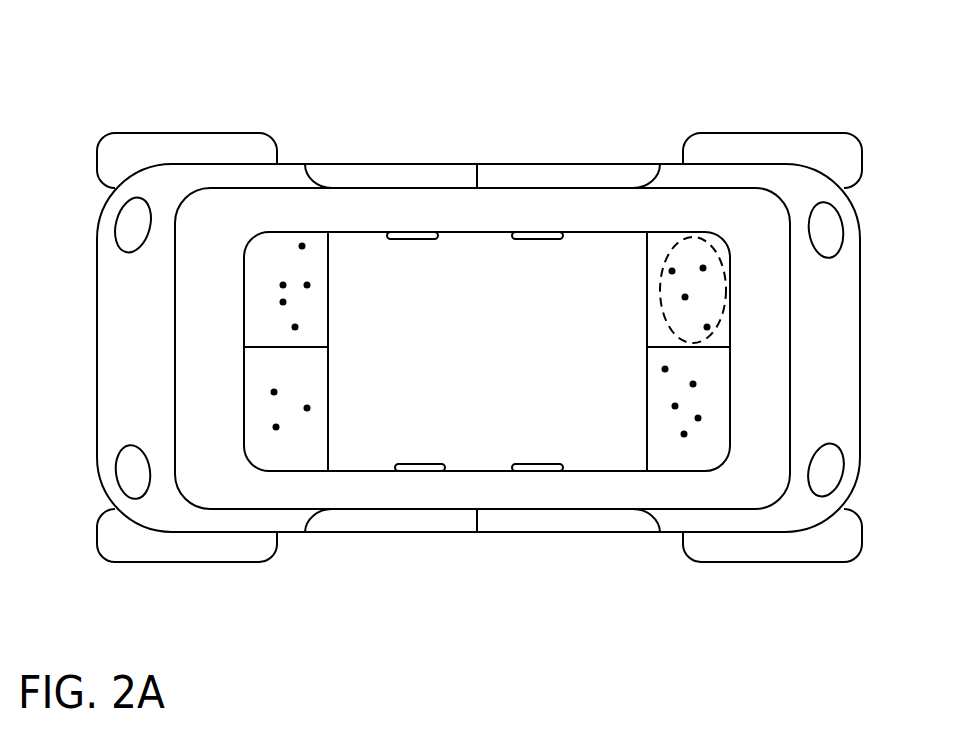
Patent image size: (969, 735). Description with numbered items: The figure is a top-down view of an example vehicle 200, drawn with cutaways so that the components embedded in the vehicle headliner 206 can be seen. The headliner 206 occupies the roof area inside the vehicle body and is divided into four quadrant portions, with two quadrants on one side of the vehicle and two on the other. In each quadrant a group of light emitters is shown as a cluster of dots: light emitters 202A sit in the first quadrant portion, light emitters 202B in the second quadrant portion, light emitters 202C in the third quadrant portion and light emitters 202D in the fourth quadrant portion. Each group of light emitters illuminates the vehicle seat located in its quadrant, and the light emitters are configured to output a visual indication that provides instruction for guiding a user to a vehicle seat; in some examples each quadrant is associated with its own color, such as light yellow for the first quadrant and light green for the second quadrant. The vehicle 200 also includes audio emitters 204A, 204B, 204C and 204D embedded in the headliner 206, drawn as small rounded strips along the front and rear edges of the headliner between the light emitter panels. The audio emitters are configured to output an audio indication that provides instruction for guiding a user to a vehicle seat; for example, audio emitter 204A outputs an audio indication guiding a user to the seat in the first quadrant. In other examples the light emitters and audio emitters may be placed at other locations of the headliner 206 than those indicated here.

The vehicle 200 is at (162, 183).
The light emitter 202A is at (685, 258).
The light emitter 202B is at (699, 445).
The light emitter 202C is at (272, 255).
The light emitter 202D is at (303, 447).
The audio emitter 204A is at (535, 232).
The audio emitter 204B is at (547, 471).
The audio emitter 204C is at (430, 232).
The audio emitter 204D is at (420, 471).
The vehicle headliner 206 is at (390, 287).